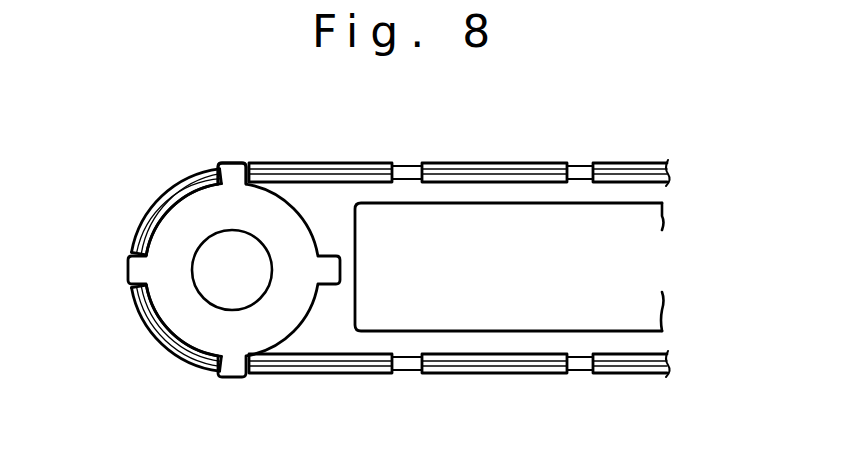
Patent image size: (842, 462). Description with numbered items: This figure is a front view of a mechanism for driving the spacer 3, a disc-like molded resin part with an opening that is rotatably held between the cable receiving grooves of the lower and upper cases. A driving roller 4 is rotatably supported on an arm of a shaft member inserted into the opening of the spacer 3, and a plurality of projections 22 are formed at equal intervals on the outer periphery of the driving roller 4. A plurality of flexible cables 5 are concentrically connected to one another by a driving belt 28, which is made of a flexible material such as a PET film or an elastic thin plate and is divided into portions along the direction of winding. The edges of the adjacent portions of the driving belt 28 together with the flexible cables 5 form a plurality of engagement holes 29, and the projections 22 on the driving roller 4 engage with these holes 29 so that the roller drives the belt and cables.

The spacer 3 is at (527, 305).
The driving roller 4 is at (172, 313).
The flexible cable 5 is at (404, 163).
The projection 22 is at (232, 165).
The driving belt 28 is at (305, 163).
The engagement hole 29 is at (135, 252).